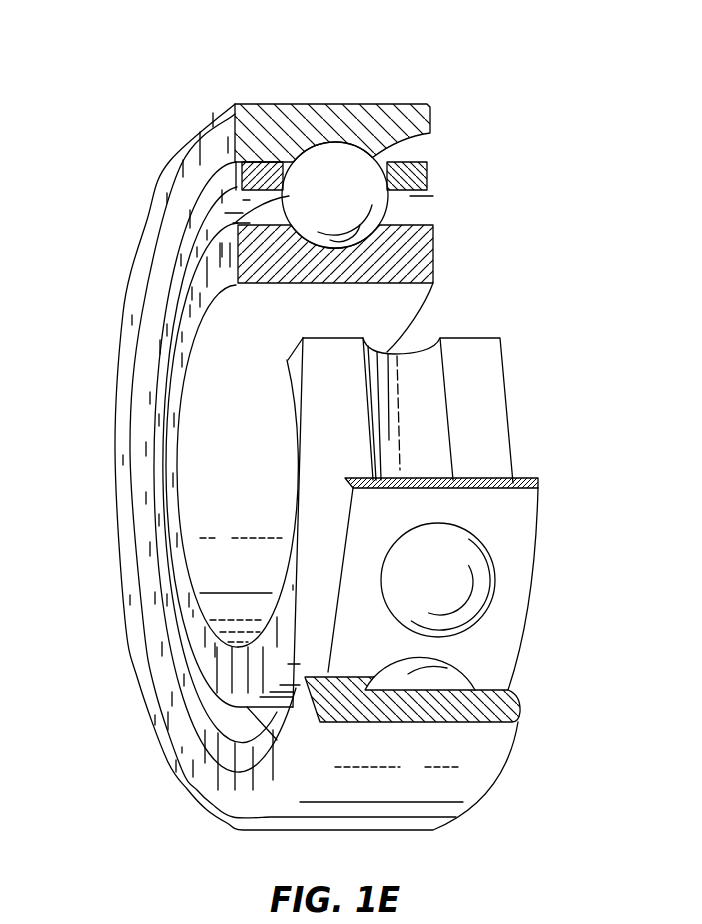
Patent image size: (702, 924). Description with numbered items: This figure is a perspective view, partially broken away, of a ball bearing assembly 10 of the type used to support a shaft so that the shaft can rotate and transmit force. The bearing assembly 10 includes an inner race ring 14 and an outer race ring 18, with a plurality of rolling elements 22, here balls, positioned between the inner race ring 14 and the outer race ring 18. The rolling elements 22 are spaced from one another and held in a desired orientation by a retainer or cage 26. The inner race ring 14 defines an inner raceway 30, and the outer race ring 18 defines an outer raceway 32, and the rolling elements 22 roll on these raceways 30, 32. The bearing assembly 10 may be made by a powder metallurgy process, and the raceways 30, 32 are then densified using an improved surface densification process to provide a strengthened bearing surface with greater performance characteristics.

The bearing assembly 10 is at (108, 78).
The inner race ring 14 is at (230, 256).
The outer race ring 18 is at (233, 122).
The rolling elements 22 is at (385, 206).
The cage 26 is at (232, 178).
The inner raceway 30 is at (417, 377).
The outer raceway 32 is at (316, 143).